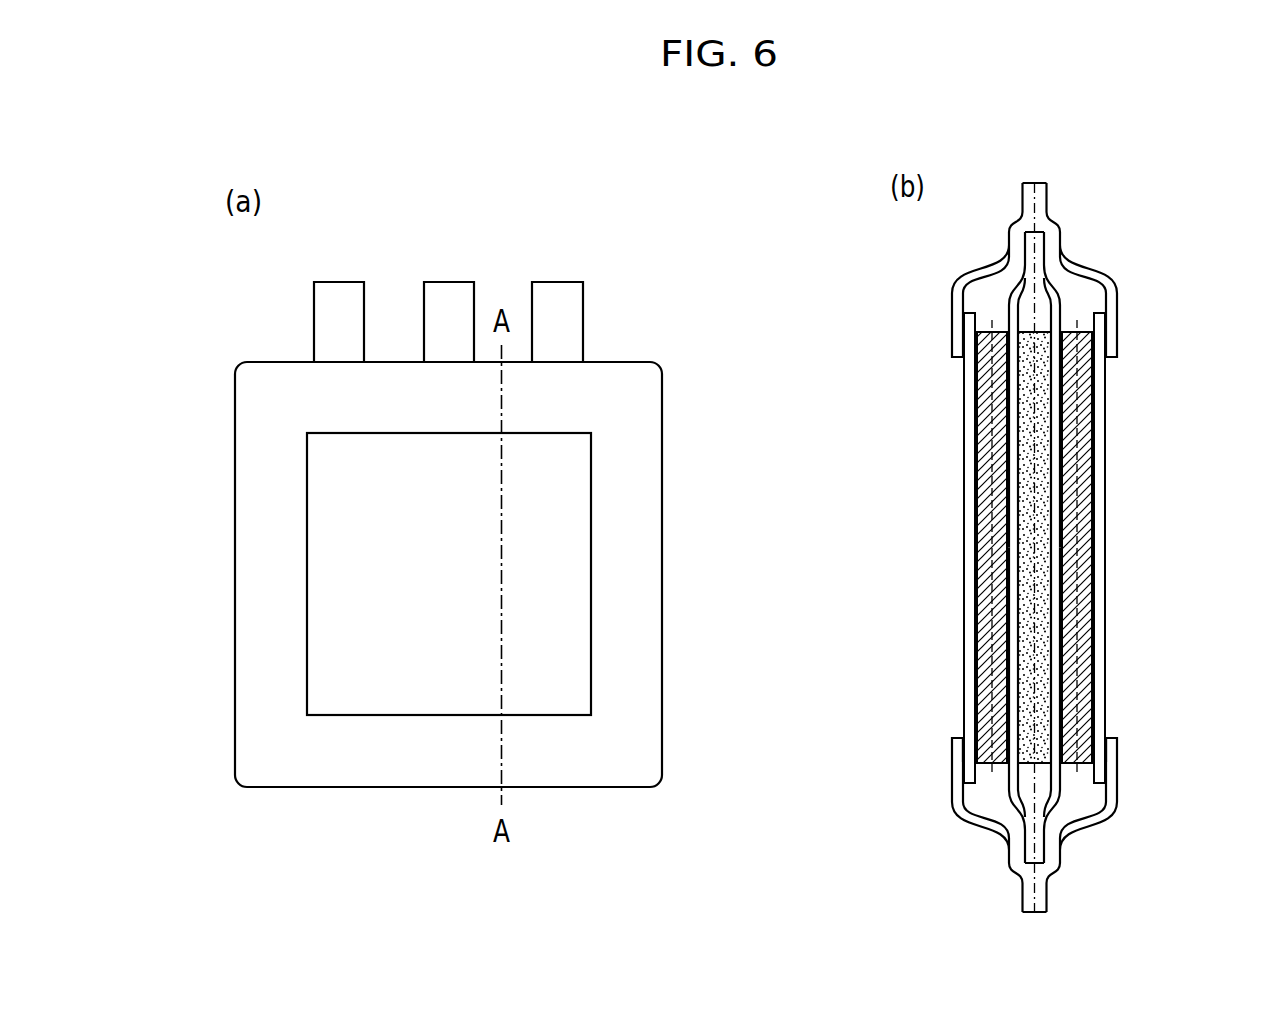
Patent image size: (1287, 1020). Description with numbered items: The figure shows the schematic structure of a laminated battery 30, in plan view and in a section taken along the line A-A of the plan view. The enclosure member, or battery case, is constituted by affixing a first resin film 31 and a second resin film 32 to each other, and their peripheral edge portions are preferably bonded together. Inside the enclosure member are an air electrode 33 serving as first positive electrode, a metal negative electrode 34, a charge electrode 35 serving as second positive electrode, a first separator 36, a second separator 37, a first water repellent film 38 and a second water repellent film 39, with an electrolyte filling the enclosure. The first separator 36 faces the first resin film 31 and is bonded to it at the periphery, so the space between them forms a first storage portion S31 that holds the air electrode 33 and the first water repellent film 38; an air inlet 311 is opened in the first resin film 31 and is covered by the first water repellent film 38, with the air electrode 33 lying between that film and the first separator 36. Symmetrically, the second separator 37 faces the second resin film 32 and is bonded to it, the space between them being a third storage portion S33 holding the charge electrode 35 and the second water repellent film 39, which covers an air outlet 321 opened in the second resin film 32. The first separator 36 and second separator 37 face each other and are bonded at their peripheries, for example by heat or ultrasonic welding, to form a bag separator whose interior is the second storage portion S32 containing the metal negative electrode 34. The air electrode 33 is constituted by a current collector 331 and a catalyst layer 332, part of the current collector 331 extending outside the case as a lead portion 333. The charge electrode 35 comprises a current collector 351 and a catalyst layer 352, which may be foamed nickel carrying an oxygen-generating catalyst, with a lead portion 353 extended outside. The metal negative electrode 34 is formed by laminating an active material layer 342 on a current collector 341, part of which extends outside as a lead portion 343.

The laminated battery 30 is at (638, 303).
The first resin film 31 is at (955, 796).
The air inlet 311 is at (307, 612).
The second resin film 32 is at (1115, 796).
The air outlet 321 is at (1111, 738).
The air electrode 33 is at (906, 547).
The current collector 331 is at (988, 458).
The catalyst layer 332 is at (992, 522).
The lead portion 333 is at (449, 297).
The metal negative electrode 34 is at (1139, 547).
The current collector 341 is at (1035, 385).
The active material layer 342 is at (1045, 447).
The lead portion 343 is at (340, 297).
The charge electrode 35 is at (1161, 547).
The current collector 351 is at (1088, 507).
The catalyst layer 352 is at (1197, 494).
The lead portion 353 is at (558, 297).
The first separator 36 is at (1011, 808).
The second separator 37 is at (1058, 808).
The first water repellent film 38 is at (975, 608).
The second water repellent film 39 is at (1100, 660).
The first storage portion S31 is at (963, 298).
The second storage portion S32 is at (1038, 300).
The third storage portion S33 is at (1105, 298).